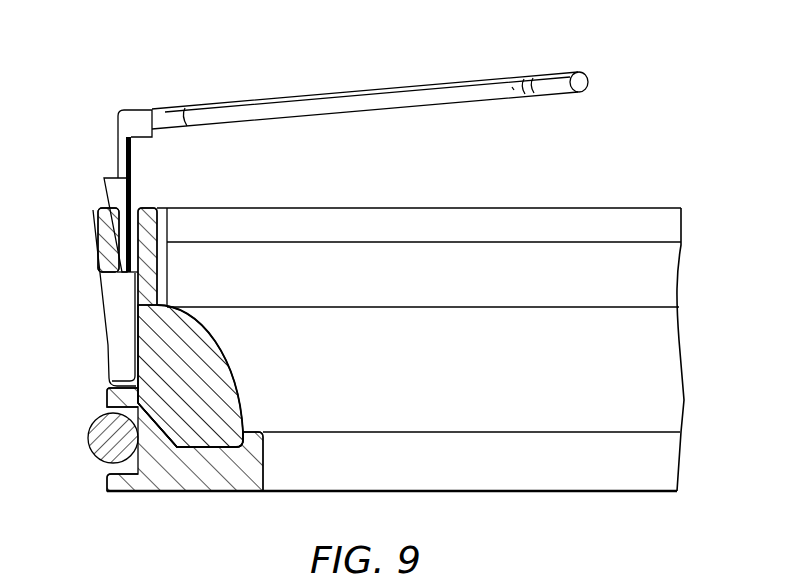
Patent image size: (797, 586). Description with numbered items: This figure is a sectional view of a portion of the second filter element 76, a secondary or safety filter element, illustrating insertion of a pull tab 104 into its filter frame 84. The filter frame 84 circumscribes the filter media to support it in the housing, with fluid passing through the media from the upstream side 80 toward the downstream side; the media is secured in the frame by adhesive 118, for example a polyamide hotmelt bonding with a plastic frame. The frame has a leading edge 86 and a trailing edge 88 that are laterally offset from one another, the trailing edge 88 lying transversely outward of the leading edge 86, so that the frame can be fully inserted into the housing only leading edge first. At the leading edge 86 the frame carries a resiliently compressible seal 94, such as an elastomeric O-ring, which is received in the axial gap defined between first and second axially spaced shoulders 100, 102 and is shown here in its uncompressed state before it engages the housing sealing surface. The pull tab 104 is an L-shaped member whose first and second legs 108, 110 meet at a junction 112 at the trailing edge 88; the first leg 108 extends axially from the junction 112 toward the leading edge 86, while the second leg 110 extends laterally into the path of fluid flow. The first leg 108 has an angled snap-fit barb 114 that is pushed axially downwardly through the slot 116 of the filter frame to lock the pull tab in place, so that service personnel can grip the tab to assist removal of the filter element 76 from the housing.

The second filter element 76 is at (706, 215).
The upstream side 80 is at (668, 369).
The filter frame 84 is at (138, 335).
The leading edge 86 is at (110, 492).
The trailing edge 88 is at (98, 210).
The seal 94 is at (88, 443).
The first shoulder 100 is at (107, 481).
The second shoulder 102 is at (107, 393).
The pull tab 104 is at (402, 85).
The first leg 108 is at (131, 163).
The second leg 110 is at (222, 101).
The junction 112 is at (130, 118).
The snap-fit barb 114 is at (104, 191).
The slot 116 is at (134, 238).
The adhesive 118 is at (222, 350).